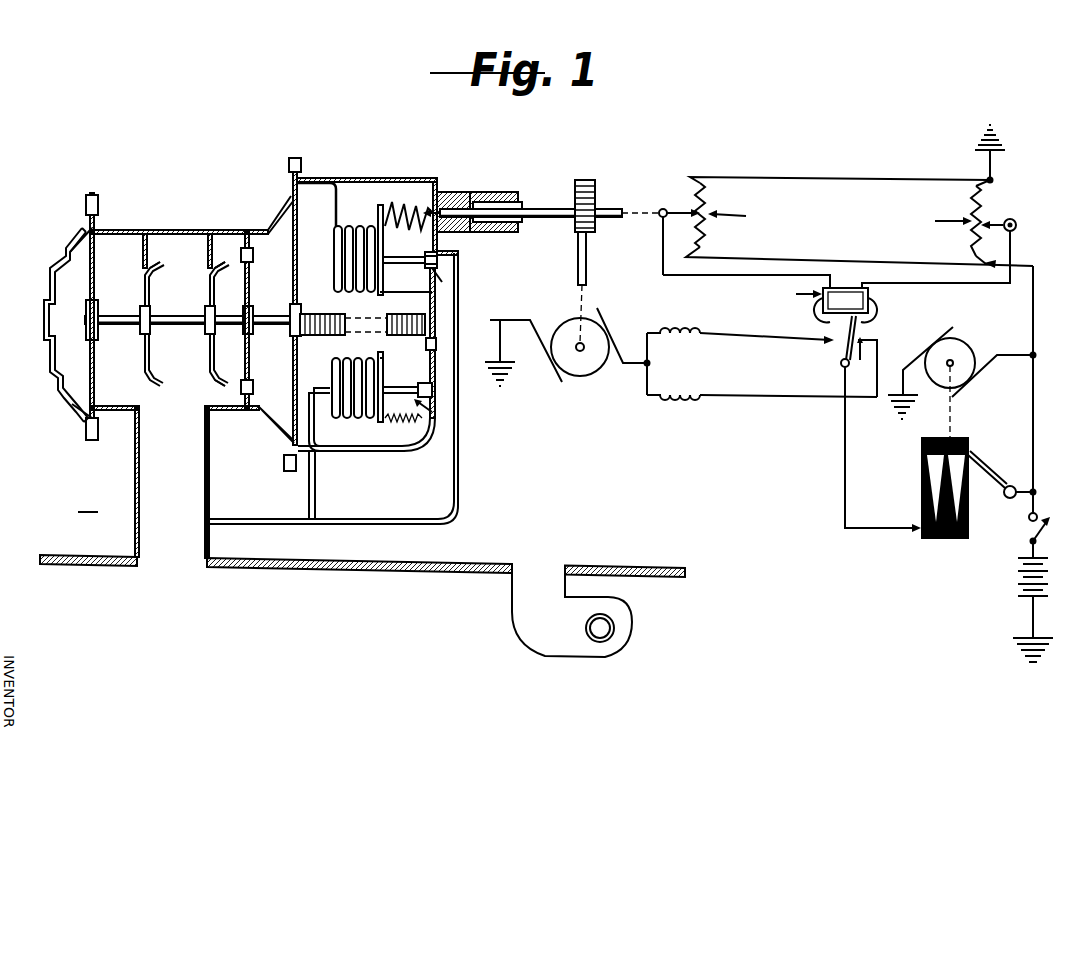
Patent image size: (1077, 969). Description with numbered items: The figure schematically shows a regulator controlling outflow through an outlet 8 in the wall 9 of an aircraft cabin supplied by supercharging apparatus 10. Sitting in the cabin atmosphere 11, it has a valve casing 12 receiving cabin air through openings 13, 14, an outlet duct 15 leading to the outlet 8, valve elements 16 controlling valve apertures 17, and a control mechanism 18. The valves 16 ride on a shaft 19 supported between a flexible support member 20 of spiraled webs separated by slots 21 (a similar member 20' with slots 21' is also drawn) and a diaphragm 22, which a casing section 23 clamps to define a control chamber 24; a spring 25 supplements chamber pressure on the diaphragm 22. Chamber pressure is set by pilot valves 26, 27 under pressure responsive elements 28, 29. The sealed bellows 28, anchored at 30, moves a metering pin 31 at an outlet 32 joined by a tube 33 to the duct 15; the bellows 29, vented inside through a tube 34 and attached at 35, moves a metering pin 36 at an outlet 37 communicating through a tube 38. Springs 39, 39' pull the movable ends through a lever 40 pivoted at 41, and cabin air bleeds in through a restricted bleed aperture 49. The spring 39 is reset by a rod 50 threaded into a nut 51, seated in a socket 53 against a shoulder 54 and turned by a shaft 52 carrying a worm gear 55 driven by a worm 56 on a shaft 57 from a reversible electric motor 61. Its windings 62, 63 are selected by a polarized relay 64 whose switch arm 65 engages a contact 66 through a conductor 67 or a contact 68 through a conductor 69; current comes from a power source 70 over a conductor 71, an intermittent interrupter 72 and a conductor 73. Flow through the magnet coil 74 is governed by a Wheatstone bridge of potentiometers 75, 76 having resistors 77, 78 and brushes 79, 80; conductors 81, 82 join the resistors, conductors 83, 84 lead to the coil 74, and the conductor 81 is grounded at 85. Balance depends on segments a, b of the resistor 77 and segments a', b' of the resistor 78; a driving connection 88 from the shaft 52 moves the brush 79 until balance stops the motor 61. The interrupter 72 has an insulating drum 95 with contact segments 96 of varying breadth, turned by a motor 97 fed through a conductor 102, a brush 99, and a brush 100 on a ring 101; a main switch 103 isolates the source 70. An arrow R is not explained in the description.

The outlet 8 is at (170, 566).
The wall 9 is at (312, 568).
The supercharging apparatus 10 is at (522, 630).
The cabin atmosphere 11 is at (91, 371).
The valve casing 12 is at (182, 231).
The opening 13 is at (118, 232).
The opening 14 is at (276, 222).
The outlet duct 15 is at (208, 508).
The valve elements 16 is at (143, 297).
The valve apertures 17 is at (145, 273).
The control mechanism 18 is at (378, 180).
The shaft 19 is at (178, 325).
The flexible support member 20 is at (60, 316).
The second rotor disc 20' is at (263, 320).
The slots 21 is at (63, 325).
The second blade 21' is at (230, 324).
The diaphragm 22 is at (293, 288).
The casing section 23 is at (402, 452).
The control chamber 24 is at (403, 432).
The spring 25 is at (382, 313).
The pilot valve 26 is at (444, 281).
The pilot valve 27 is at (424, 417).
The pressure responsive element 28 is at (364, 232).
The pressure responsive element 29 is at (336, 359).
The anchor 30 is at (316, 211).
The metering pin 31 is at (404, 256).
The outlet 32 is at (438, 257).
The tube 33 is at (454, 483).
The tube 34 is at (316, 498).
The connection 35 is at (324, 453).
The metering pin 36 is at (392, 386).
The outlet 37 is at (434, 387).
The tube 38 is at (434, 401).
The spring 39 is at (417, 191).
The spring 39' is at (437, 437).
The lever 40 is at (376, 213).
The pivot 41 is at (380, 294).
The restricted bleed aperture 49 is at (437, 344).
The rod 50 is at (455, 195).
The nut 51 is at (520, 208).
The shaft 52 is at (556, 207).
The socket 53 is at (508, 201).
The shoulder 54 is at (485, 195).
The worm gear 55 is at (588, 180).
The worm 56 is at (596, 206).
The shaft 57 is at (587, 274).
The reversible electric motor 61 is at (590, 369).
The winding 62 is at (698, 324).
The winding 63 is at (686, 401).
The polarized relay 64 is at (797, 294).
The switch arm 65 is at (840, 365).
The contact 66 is at (822, 344).
The conductor 67 is at (756, 339).
The contact 68 is at (860, 361).
The conductor 69 is at (792, 399).
The power source 70 is at (1017, 581).
The conductor 71 is at (1033, 450).
The intermittent interrupter 72 is at (914, 537).
The conductor 73 is at (845, 491).
The magnet coil 74 is at (870, 298).
The potentiometer 75 is at (740, 215).
The potentiometer 76 is at (937, 221).
The resistor 77 is at (708, 198).
The resistor 78 is at (958, 213).
The brush 79 is at (688, 209).
The brush 80 is at (990, 223).
The conductor 81 is at (838, 177).
The conductor 82 is at (838, 264).
The conductor 83 is at (754, 277).
The conductor 84 is at (940, 284).
The ground 85 is at (984, 149).
The driving connection 88 is at (640, 207).
The drum 95 is at (924, 441).
The contact segments 96 is at (968, 511).
The motor 97 is at (968, 346).
The brush 99 is at (1004, 485).
The brush 100 is at (918, 527).
The ring 101 is at (940, 537).
The conductor 102 is at (1008, 359).
The main switch 103 is at (1036, 512).
The direction of rotation R is at (163, 224).
The segment a is at (718, 202).
The segment b is at (714, 245).
The segment a' is at (954, 249).
The segment b' is at (966, 187).